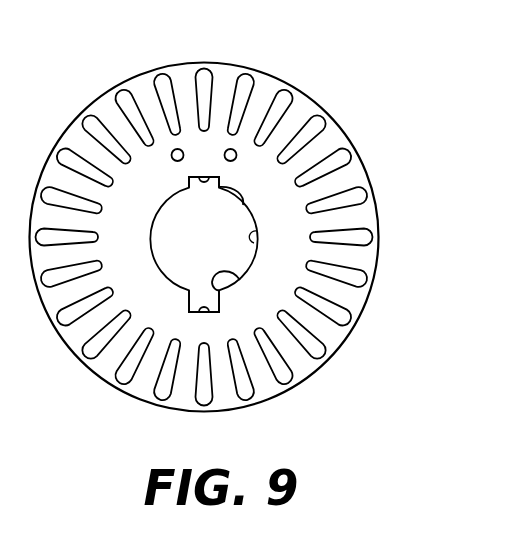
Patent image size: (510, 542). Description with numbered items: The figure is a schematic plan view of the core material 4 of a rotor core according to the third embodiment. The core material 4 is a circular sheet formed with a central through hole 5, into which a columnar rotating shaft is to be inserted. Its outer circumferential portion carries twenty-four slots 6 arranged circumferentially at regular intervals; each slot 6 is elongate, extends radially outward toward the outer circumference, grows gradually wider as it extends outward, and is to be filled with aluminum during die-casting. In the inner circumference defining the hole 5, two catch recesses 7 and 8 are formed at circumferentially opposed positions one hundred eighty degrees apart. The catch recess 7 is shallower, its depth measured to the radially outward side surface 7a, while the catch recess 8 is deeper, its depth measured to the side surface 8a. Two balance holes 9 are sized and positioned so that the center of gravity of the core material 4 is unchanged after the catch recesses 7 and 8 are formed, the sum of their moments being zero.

The core material 4 is at (315, 100).
The hole 5 is at (258, 240).
The slot 6 is at (206, 86).
The catch recess 7 is at (232, 194).
The side surface 7a is at (207, 174).
The catch recess 8 is at (241, 280).
The side surface 8a is at (208, 313).
The balance hole 9 is at (171, 161).